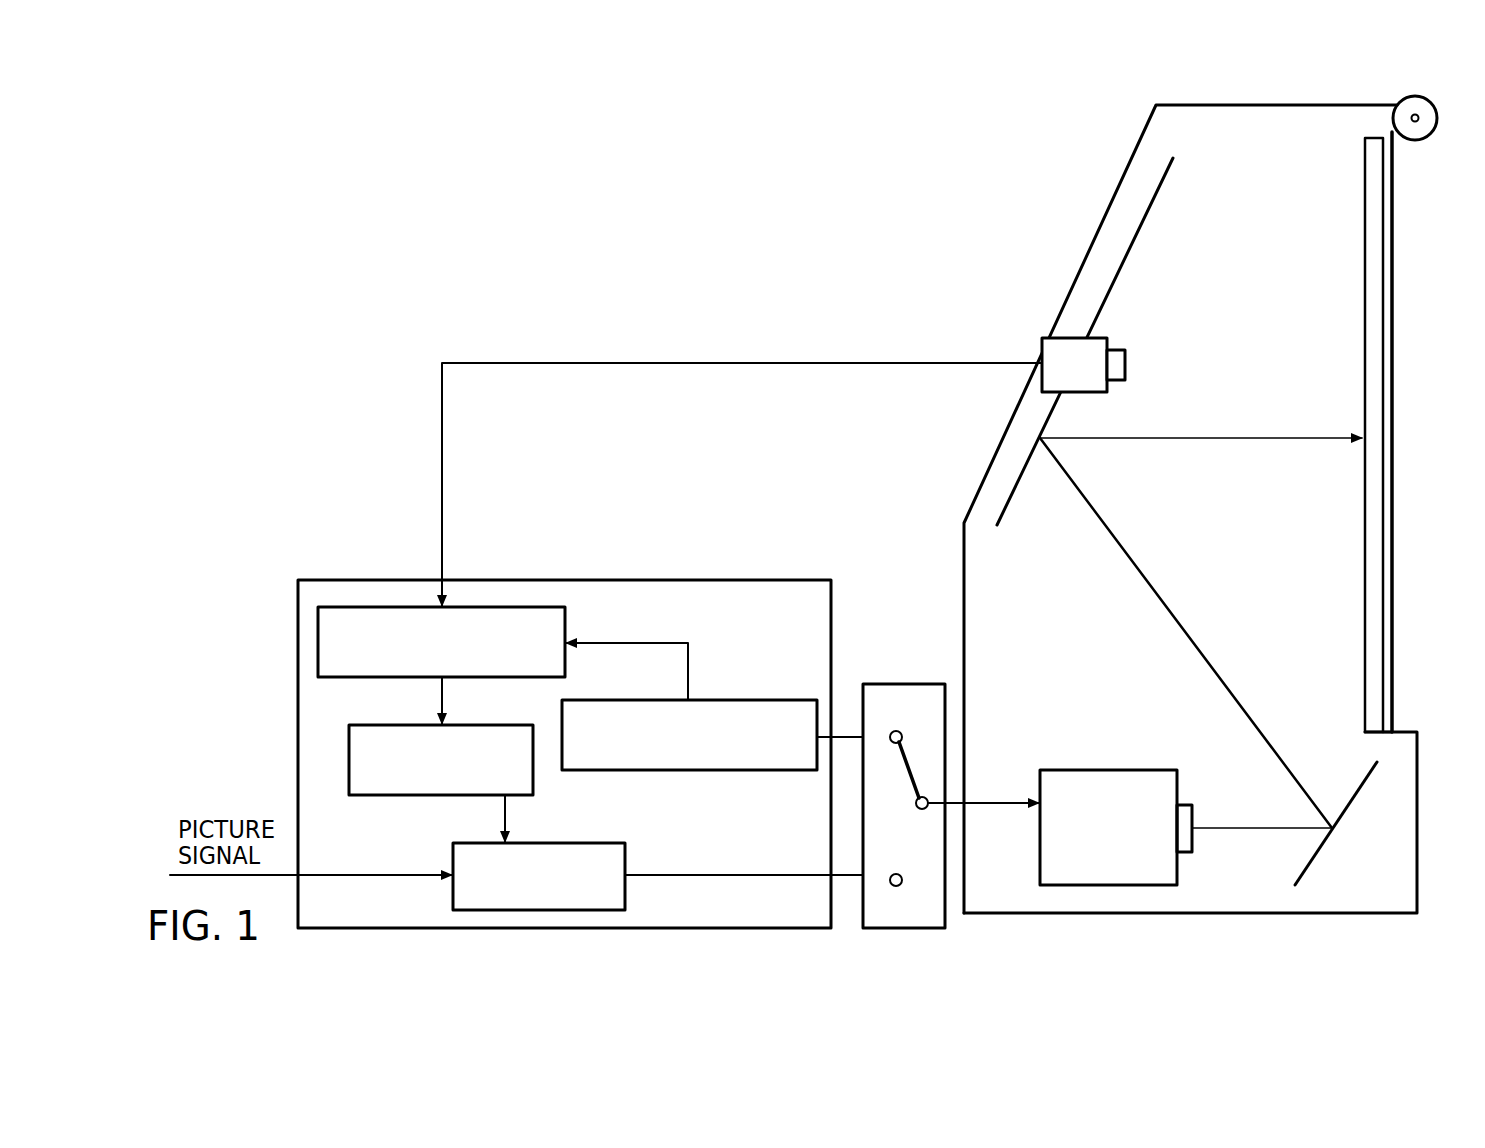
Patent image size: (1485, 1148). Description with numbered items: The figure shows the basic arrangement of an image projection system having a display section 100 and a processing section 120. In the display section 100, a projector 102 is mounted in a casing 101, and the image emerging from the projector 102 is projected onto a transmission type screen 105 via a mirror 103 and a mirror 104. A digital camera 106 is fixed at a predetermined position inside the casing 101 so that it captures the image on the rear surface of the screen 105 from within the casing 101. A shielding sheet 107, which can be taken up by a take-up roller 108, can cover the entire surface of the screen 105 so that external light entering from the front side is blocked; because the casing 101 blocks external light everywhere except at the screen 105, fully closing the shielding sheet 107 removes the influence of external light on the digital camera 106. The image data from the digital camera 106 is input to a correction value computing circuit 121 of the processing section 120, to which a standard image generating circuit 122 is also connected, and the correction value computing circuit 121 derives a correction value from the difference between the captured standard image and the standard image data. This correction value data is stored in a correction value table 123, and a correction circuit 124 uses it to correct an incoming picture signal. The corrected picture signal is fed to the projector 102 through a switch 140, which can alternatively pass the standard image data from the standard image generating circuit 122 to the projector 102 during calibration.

The display section 100 is at (1093, 175).
The casing 101 is at (1417, 903).
The projector 102 is at (1040, 848).
The mirror 103 is at (1315, 860).
The mirror 104 is at (1006, 504).
The transmission type screen 105 is at (1373, 734).
The digital camera 106 is at (1042, 340).
The shielding sheet 107 is at (1393, 405).
The take-up roller 108 is at (1425, 143).
The processing section 120 is at (305, 565).
The correction value computing circuit 121 is at (356, 679).
The standard image generating circuit 122 is at (752, 700).
The correction value table 123 is at (396, 797).
The correction circuit 124 is at (588, 845).
The switch 140 is at (903, 683).